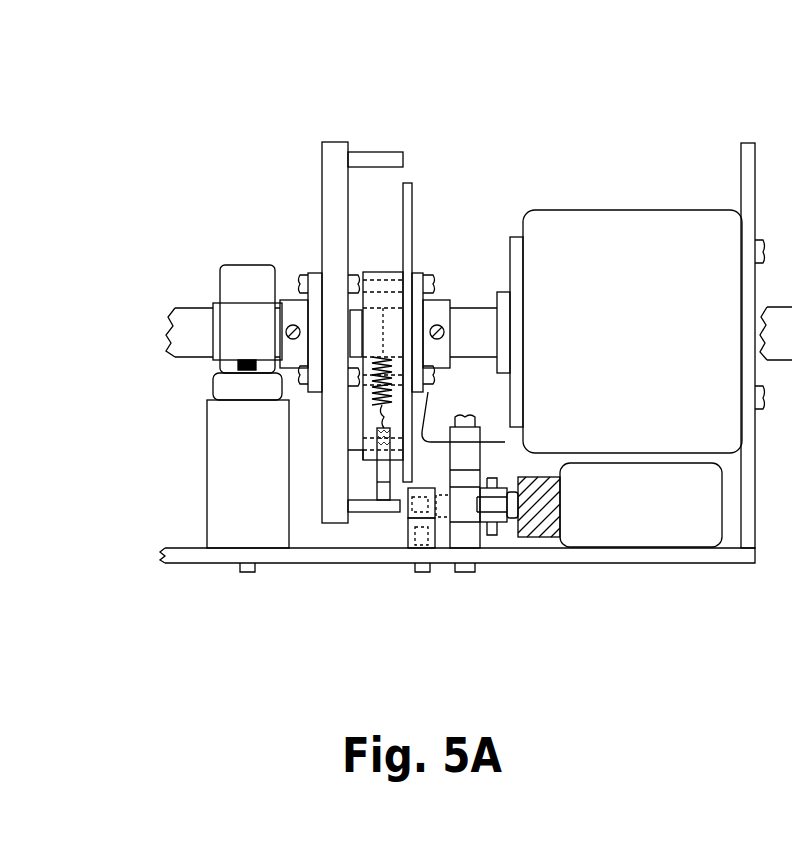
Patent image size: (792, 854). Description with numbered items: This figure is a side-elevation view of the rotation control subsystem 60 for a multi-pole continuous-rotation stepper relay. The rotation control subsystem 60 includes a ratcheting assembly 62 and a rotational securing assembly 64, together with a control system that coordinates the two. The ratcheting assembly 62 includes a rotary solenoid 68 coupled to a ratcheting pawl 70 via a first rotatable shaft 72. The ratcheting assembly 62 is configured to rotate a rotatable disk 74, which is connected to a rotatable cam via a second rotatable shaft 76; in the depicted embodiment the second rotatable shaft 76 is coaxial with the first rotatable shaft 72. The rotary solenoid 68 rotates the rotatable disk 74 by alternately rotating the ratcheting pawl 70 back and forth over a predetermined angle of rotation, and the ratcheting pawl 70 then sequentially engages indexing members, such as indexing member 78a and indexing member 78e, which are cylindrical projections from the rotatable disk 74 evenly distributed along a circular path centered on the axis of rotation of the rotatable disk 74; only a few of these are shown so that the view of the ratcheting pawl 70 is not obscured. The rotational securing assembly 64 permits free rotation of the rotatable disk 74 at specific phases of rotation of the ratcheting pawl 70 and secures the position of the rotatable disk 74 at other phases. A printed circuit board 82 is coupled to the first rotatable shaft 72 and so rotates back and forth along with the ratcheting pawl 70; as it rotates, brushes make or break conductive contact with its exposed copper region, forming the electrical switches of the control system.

The rotation control subsystem 60 is at (690, 115).
The ratcheting assembly 62 is at (517, 192).
The rotational securing assembly 64 is at (610, 573).
The rotary solenoid 68 is at (657, 343).
The ratcheting pawl 70 is at (380, 270).
The first rotatable shaft 72 is at (480, 306).
The rotatable disk 74 is at (332, 141).
The second rotatable shaft 76 is at (190, 308).
The indexing member 78a is at (372, 150).
The indexing member 78e is at (372, 512).
The Printed Circuit Board (PCB) 82 is at (413, 195).